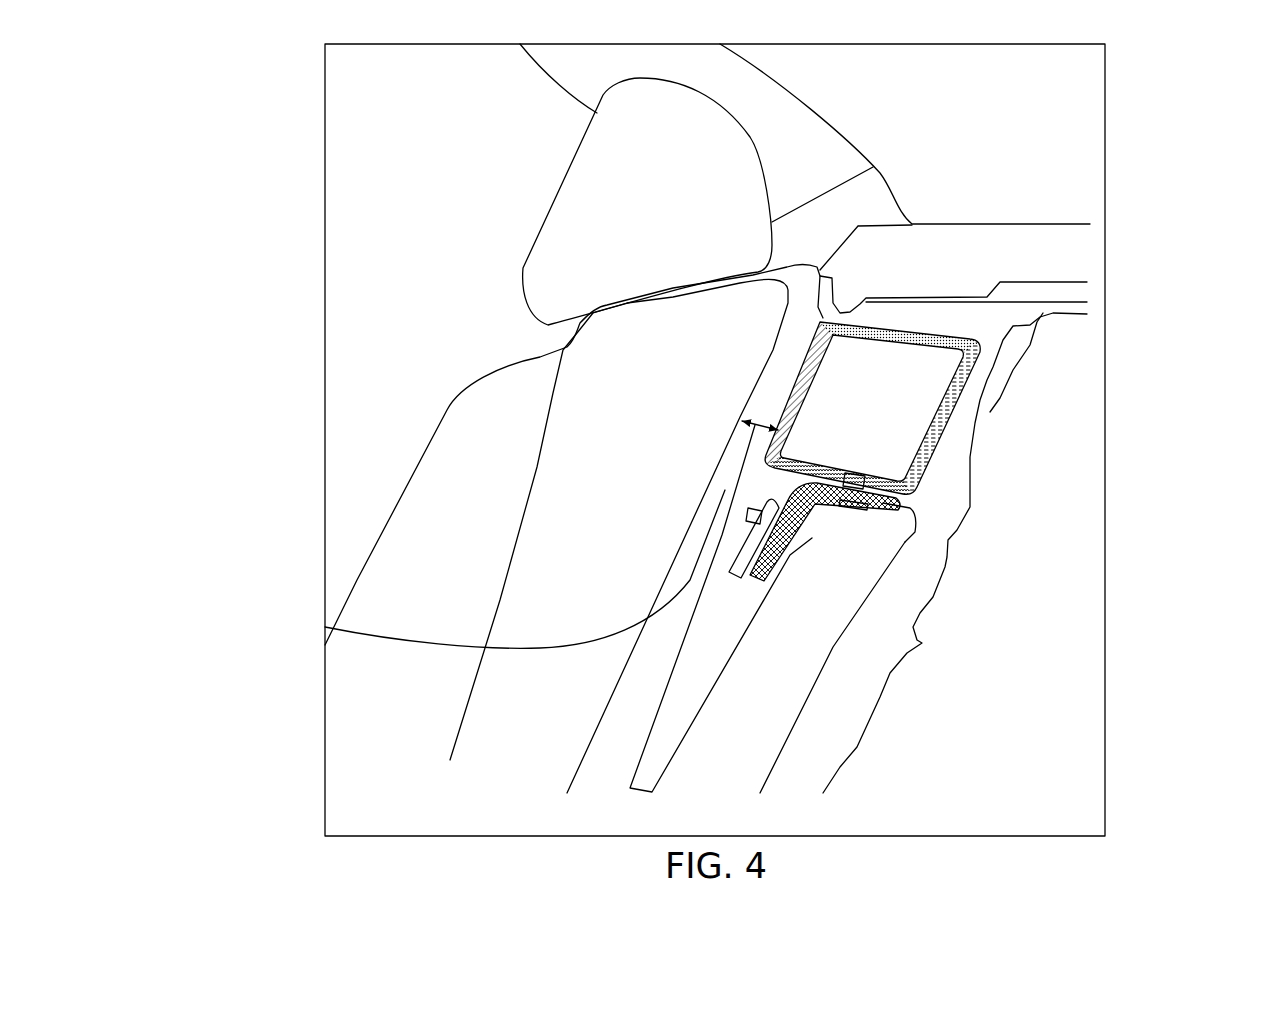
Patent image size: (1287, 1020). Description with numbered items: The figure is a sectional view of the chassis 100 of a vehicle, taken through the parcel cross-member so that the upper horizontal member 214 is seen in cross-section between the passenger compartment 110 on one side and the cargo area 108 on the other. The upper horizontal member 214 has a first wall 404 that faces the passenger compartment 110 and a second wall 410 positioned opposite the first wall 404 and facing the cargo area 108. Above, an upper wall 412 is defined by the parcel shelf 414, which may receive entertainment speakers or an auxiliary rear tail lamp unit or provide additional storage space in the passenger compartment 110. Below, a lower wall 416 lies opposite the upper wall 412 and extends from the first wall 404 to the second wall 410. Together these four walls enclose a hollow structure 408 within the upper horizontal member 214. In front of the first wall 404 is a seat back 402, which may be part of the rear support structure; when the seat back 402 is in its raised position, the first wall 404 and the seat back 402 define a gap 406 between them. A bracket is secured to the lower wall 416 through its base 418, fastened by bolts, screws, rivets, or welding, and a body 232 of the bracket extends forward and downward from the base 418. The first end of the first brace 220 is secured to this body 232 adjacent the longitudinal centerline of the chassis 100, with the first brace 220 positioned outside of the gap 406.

The chassis 100 is at (1007, 140).
The passenger compartment 110 is at (420, 192).
The seat back 402 is at (663, 435).
The gap 406 is at (325, 627).
The parcel shelf 414 is at (897, 297).
The upper horizontal member 214 is at (953, 327).
The cargo area 108 is at (1018, 527).
The upper wall 412 is at (913, 323).
The first wall 404 is at (810, 380).
The second wall 410 is at (952, 408).
The hollow structure 408 is at (863, 443).
The lower wall 416 is at (883, 500).
The base 418 is at (817, 502).
The body 232 is at (815, 547).
The first brace 220 is at (707, 640).